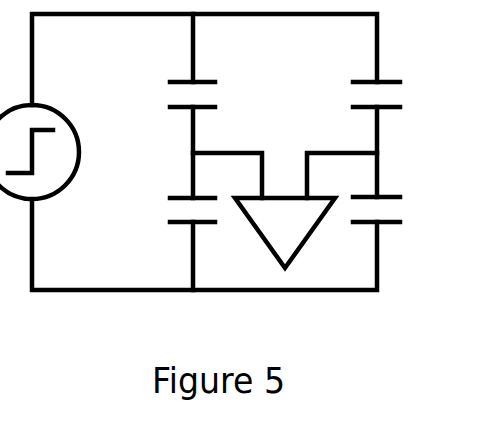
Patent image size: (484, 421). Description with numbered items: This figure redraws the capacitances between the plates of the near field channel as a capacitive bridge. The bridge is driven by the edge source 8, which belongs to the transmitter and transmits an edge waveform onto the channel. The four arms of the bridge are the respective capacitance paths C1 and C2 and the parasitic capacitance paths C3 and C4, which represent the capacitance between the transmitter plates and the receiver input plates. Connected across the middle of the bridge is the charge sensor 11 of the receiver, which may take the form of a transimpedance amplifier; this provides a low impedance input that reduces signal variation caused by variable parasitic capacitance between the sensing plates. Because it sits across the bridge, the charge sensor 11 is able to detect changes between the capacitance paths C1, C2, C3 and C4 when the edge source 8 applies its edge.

The edge source 8 is at (49, 107).
The charge sensor 11 is at (263, 234).
The capacitance path C1 is at (163, 94).
The capacitance path C2 is at (405, 209).
The parasitic capacitance path C3 is at (405, 94).
The parasitic capacitance path C4 is at (163, 209).